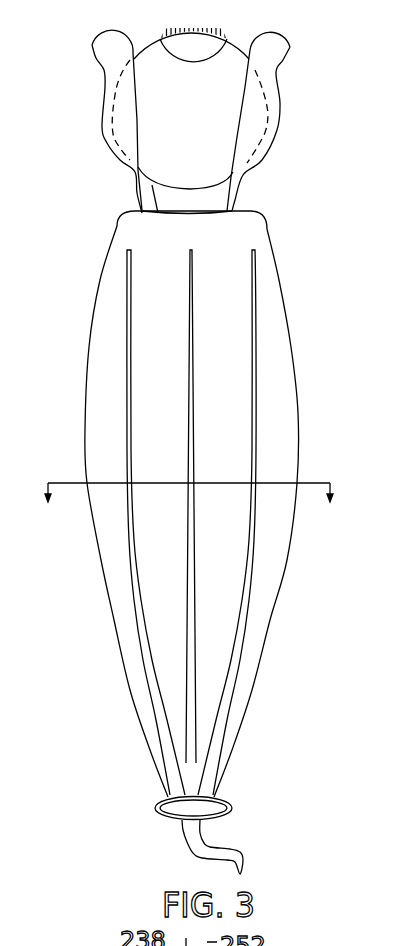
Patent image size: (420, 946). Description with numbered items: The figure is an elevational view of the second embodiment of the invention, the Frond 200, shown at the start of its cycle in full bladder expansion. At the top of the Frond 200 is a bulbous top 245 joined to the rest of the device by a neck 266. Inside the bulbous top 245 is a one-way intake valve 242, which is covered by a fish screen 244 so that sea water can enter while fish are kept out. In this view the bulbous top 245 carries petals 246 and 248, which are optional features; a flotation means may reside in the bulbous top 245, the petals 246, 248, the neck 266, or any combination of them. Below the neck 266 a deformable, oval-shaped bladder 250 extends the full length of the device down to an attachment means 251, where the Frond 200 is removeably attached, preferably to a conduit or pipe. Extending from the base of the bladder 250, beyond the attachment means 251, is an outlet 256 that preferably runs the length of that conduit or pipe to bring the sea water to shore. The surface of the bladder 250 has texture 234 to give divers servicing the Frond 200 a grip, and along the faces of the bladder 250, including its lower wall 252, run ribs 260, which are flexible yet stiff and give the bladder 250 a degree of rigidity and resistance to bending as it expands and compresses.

The Frond 200 is at (285, 193).
The texture 234 is at (283, 382).
The one-way intake valve 242 is at (168, 42).
The fish screen 244 is at (200, 38).
The bulbous top 245 is at (255, 118).
The petals 246 is at (125, 84).
The right flap 248 is at (277, 49).
The deformable bladder 250 is at (95, 441).
The attachment means 251 is at (232, 808).
The lower body wall 252 is at (279, 598).
The outlet 256 is at (245, 856).
The ribs 260 is at (250, 403).
The neck 266 is at (157, 201).